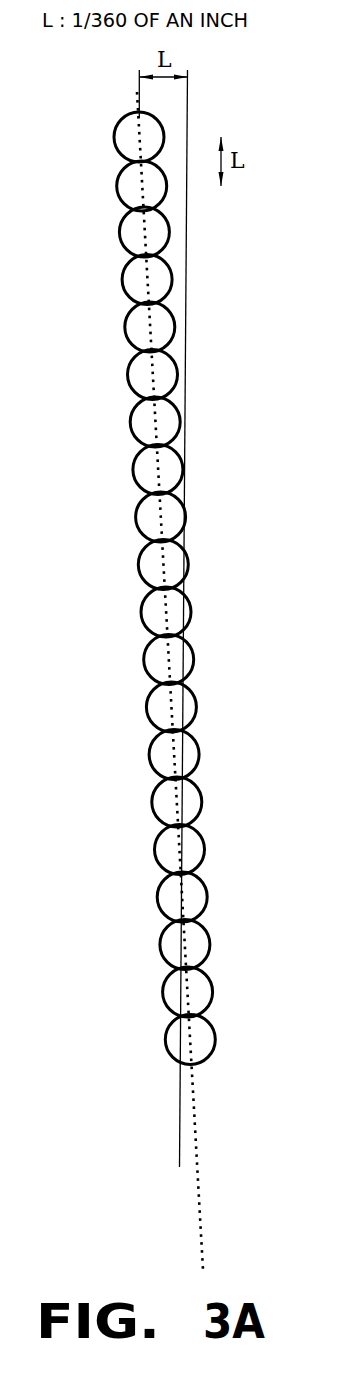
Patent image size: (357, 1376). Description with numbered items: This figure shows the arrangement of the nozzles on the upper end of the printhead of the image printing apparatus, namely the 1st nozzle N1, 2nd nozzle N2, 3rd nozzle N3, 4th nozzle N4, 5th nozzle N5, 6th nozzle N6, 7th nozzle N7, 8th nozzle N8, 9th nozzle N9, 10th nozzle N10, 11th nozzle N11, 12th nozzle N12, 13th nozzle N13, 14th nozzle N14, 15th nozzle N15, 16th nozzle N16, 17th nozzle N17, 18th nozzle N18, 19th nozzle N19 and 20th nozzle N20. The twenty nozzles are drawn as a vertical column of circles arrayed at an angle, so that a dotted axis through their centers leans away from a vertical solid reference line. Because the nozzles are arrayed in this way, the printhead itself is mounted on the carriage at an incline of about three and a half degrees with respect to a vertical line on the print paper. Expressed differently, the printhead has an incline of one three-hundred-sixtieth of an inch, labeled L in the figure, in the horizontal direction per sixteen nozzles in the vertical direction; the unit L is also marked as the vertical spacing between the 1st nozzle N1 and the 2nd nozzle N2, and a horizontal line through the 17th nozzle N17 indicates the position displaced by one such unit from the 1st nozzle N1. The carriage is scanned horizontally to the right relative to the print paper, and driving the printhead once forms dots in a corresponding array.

The 1st nozzle N1 is at (237, 137).
The 2nd nozzle N2 is at (237, 186).
The 3rd nozzle N3 is at (116, 232).
The 4th nozzle N4 is at (117, 280).
The 5th nozzle N5 is at (120, 327).
The 6th nozzle N6 is at (124, 375).
The 7th nozzle N7 is at (125, 422).
The 8th nozzle N8 is at (129, 470).
The 9th nozzle N9 is at (133, 517).
The 10th nozzle N10 is at (135, 565).
The 11th nozzle N11 is at (137, 612).
The 12th nozzle N12 is at (140, 660).
The 13th nozzle N13 is at (143, 707).
The 14th nozzle N14 is at (146, 755).
The 15th nozzle N15 is at (148, 802).
The 16th nozzle N16 is at (151, 850).
The 17th nozzle N17 is at (219, 897).
The 18th nozzle N18 is at (156, 945).
The 19th nozzle N19 is at (159, 992).
The 20th nozzle N20 is at (161, 1040).